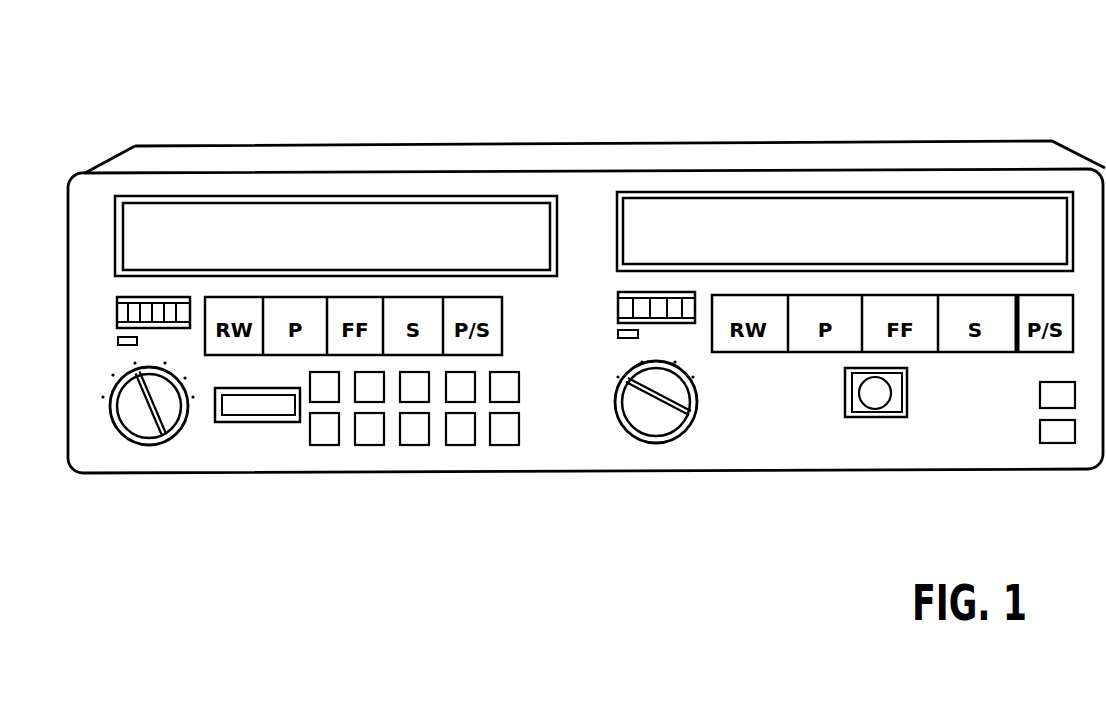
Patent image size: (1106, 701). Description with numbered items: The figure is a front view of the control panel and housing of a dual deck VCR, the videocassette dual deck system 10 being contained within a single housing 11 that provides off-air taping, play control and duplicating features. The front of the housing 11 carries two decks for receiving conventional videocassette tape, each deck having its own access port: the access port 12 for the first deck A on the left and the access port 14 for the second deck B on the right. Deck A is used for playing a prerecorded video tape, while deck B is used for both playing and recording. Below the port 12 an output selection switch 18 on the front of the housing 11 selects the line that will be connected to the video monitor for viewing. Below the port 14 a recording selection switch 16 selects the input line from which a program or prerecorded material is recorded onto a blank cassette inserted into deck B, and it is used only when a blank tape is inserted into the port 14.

The videocassette dual deck system 10 is at (812, 126).
The housing 11 is at (605, 169).
The access port for first deck A 12 is at (443, 203).
The access port for second deck B 14 is at (923, 207).
The recording selection switch 16 is at (695, 413).
The output selection switch 18 is at (175, 428).